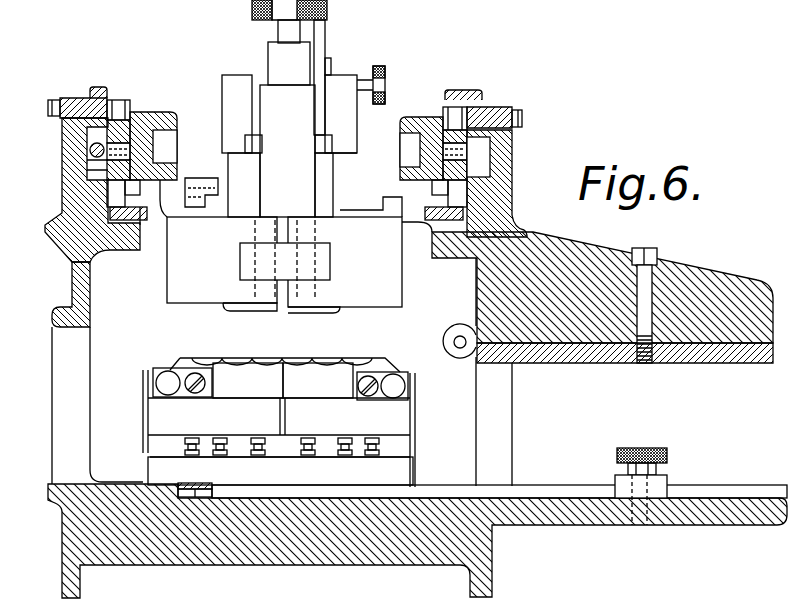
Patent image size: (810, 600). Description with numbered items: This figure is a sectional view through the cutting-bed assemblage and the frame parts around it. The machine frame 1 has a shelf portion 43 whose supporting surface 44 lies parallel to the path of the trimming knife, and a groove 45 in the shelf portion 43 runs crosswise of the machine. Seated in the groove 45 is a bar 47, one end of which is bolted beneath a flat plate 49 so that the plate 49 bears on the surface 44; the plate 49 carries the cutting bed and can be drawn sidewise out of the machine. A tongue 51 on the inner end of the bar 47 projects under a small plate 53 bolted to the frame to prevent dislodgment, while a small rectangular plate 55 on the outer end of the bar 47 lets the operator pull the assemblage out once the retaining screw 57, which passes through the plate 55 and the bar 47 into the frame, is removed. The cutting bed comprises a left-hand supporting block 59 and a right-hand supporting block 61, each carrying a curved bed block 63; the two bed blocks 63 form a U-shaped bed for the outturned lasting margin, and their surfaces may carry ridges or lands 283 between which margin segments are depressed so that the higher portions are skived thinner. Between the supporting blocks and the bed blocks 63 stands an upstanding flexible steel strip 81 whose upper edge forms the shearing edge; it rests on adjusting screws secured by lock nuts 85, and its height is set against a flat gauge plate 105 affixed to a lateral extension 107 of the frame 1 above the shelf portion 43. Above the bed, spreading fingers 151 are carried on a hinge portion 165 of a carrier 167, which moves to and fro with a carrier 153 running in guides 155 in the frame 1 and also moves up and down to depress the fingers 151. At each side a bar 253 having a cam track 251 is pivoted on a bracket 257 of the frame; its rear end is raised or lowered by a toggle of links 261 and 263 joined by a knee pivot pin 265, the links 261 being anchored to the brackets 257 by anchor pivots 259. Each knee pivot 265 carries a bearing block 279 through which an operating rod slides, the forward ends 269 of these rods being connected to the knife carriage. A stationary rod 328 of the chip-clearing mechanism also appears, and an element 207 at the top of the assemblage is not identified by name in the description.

The frame 1 is at (493, 552).
The shelf portion 43 is at (713, 510).
The supporting surface 44 is at (692, 488).
The groove 45 is at (753, 497).
The bar 47 is at (540, 495).
The flat plate 49 is at (403, 468).
The tongue 51 is at (214, 493).
The small plate 53 is at (188, 485).
The small rectangular plate 55 is at (622, 482).
The retaining screw 57 is at (641, 453).
The left-hand supporting block 59 is at (155, 412).
The right-hand supporting block 61 is at (405, 417).
The bed block 63 is at (283, 380).
The flexible steel strip 81 is at (232, 357).
The lock nuts 85 is at (250, 438).
The gauge plate 105 is at (555, 354).
The lateral extension 107 is at (700, 293).
The upper-margin spreading fingers 151 is at (192, 296).
The carrier 153 is at (353, 163).
The guides 155 is at (170, 207).
The hinge portion 165 is at (307, 272).
The carrier 167 is at (272, 209).
The knurled adjusting knob 207 is at (383, 72).
The cam tracks 251 is at (165, 138).
The bars 253 is at (170, 118).
The brackets 257 is at (100, 87).
The anchor pivots 259 is at (118, 105).
The links 261 is at (63, 130).
The links 263 is at (120, 185).
The pivot pin 265 is at (135, 147).
The forward ends 269 is at (100, 168).
The bearing block 279 is at (88, 152).
The ridges or lands 283 is at (323, 353).
The stationary rod 328 is at (457, 348).